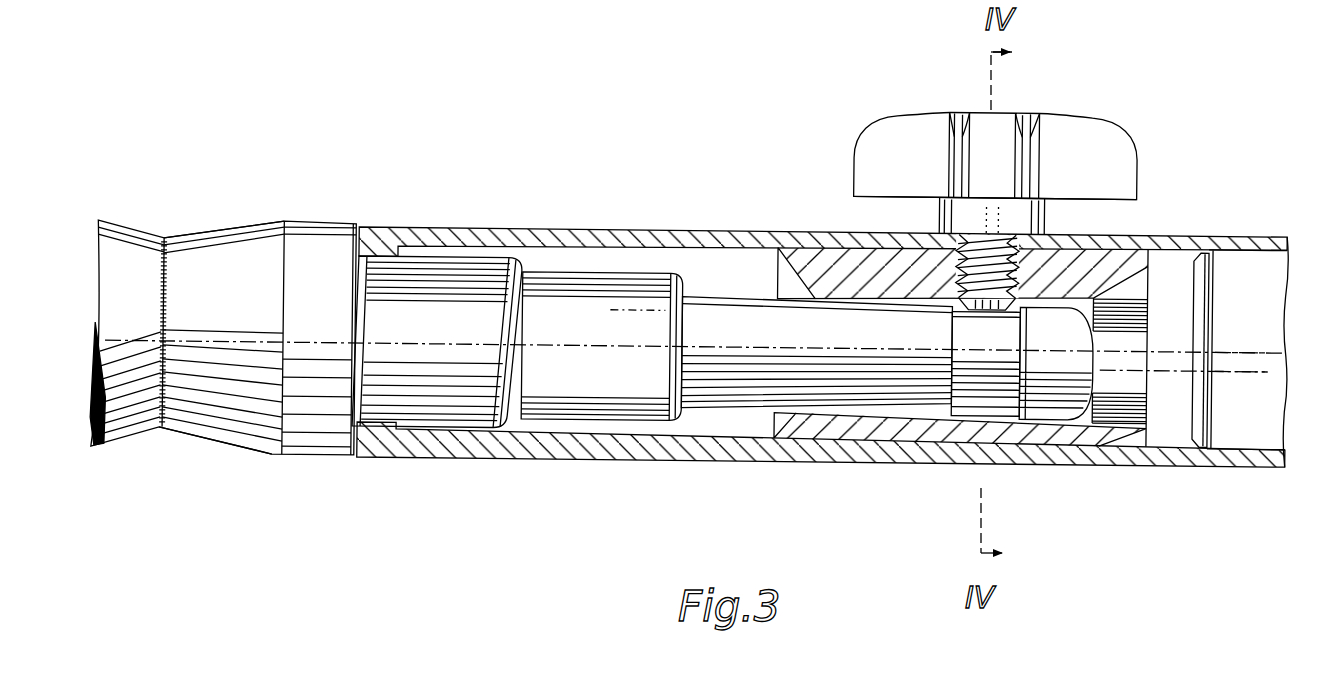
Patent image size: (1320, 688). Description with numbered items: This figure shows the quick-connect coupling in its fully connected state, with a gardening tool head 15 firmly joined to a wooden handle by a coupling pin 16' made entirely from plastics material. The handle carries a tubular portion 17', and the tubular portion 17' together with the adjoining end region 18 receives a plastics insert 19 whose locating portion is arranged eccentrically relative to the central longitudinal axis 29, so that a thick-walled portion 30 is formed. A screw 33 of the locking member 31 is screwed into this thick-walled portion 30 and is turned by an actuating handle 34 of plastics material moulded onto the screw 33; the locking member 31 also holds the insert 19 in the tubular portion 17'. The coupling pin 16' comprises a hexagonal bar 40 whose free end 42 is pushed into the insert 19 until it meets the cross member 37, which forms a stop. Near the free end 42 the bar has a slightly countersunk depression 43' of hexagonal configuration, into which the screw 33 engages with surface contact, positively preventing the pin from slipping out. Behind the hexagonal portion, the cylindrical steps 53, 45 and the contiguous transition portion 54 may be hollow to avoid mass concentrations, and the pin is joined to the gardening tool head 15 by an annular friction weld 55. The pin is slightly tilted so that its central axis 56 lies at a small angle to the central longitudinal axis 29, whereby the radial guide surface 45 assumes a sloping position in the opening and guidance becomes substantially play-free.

The gardening tool head 15 is at (123, 247).
The annular friction weld 55 is at (168, 280).
The transition portion 54 is at (237, 410).
The coupling pin 16' is at (778, 368).
The radial guide surface 45 is at (424, 400).
The cylindrical step 53 is at (565, 400).
The hexagonal bar 40 is at (715, 414).
The countersunk depression 43' is at (1000, 407).
The insert 19 is at (812, 265).
The thick-walled portion 30 is at (1080, 265).
The screw 33 is at (940, 240).
The actuating handle 34 is at (912, 130).
The locking member 31 is at (1055, 147).
The cross member 37 is at (1110, 312).
The free end 42 is at (1110, 392).
The tubular portion 17' is at (1189, 312).
The tube end section 18 is at (1237, 265).
The central longitudinal axis 29 is at (1235, 352).
The central axis 56 is at (1233, 373).